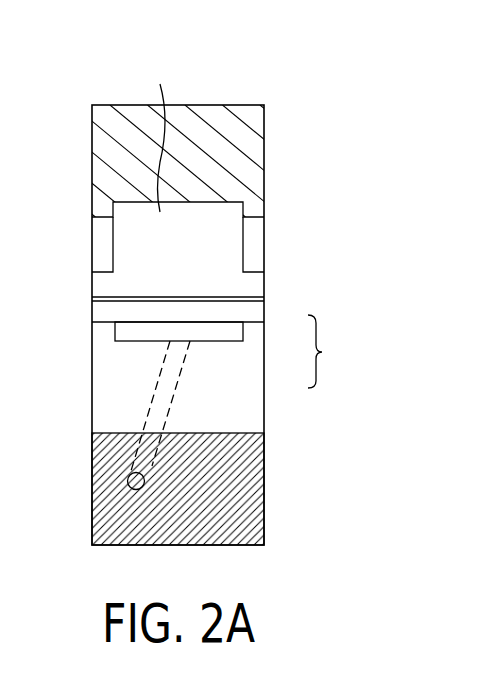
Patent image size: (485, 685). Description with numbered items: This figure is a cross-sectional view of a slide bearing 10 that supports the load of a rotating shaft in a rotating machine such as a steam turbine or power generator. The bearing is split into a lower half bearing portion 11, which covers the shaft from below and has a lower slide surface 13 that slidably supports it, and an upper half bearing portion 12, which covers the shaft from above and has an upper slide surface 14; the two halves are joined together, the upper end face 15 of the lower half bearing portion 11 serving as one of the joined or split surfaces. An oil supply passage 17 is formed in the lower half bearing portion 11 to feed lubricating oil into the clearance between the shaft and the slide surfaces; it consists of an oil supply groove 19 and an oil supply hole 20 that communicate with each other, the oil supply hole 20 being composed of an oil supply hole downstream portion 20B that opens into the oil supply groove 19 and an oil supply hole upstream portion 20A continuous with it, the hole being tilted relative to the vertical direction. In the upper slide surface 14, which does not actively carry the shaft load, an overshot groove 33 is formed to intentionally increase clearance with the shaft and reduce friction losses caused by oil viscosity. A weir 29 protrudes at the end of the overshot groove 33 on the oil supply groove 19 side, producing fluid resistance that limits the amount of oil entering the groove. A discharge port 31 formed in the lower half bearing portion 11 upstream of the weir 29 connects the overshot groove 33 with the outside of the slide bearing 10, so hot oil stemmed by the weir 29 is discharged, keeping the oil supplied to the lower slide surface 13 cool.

The slide bearing 10 is at (285, 100).
The lower half bearing portion 11 is at (93, 453).
The upper half bearing portion 12 is at (102, 152).
The lower slide surface 13 is at (213, 422).
The upper slide surface 14 is at (253, 228).
The upper end face 15 is at (103, 323).
The oil supply passage 17 is at (331, 351).
The oil supply groove 19 is at (233, 333).
The oil supply hole 20 is at (167, 373).
The oil supply hole upstream portion 20A is at (123, 490).
The oil supply hole downstream portion 20B is at (150, 400).
The weir 29 is at (187, 316).
The discharge port 31 is at (252, 290).
The overshot groove 33 is at (159, 135).